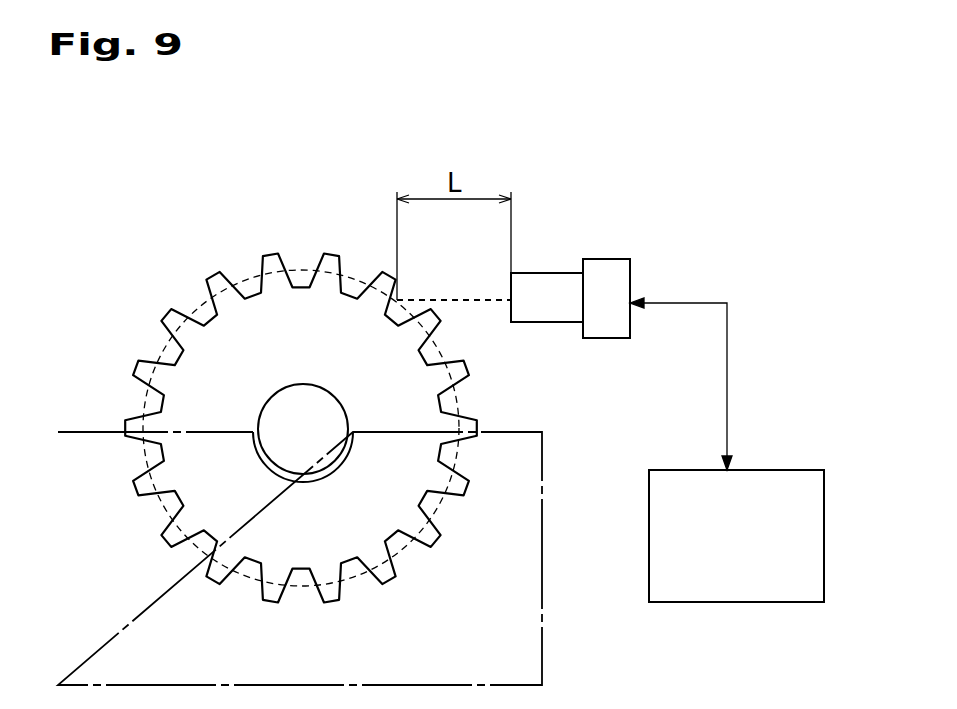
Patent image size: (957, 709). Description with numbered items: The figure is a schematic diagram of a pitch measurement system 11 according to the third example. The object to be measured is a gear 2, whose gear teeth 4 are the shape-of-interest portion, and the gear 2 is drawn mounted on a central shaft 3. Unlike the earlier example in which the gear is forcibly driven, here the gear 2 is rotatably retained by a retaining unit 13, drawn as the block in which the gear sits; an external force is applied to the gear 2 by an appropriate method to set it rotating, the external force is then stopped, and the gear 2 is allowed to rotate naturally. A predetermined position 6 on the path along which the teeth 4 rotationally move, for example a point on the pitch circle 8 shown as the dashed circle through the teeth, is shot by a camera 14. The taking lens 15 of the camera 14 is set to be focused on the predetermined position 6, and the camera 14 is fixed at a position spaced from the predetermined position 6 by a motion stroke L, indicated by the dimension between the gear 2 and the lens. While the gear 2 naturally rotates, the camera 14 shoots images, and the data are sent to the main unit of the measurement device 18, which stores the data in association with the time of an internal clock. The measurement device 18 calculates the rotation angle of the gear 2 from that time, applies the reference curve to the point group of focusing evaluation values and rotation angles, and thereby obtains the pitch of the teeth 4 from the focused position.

The gear 2 is at (212, 278).
The pitch circle 8 is at (297, 268).
The shaft 3 is at (303, 382).
The predetermined position 6 is at (397, 300).
The gear teeth 4 is at (433, 333).
The retaining unit 13 is at (518, 433).
The taking lens 15 is at (546, 273).
The camera 14 is at (600, 259).
The pitch measurement system 11 is at (745, 267).
The measurement device 18 is at (797, 470).